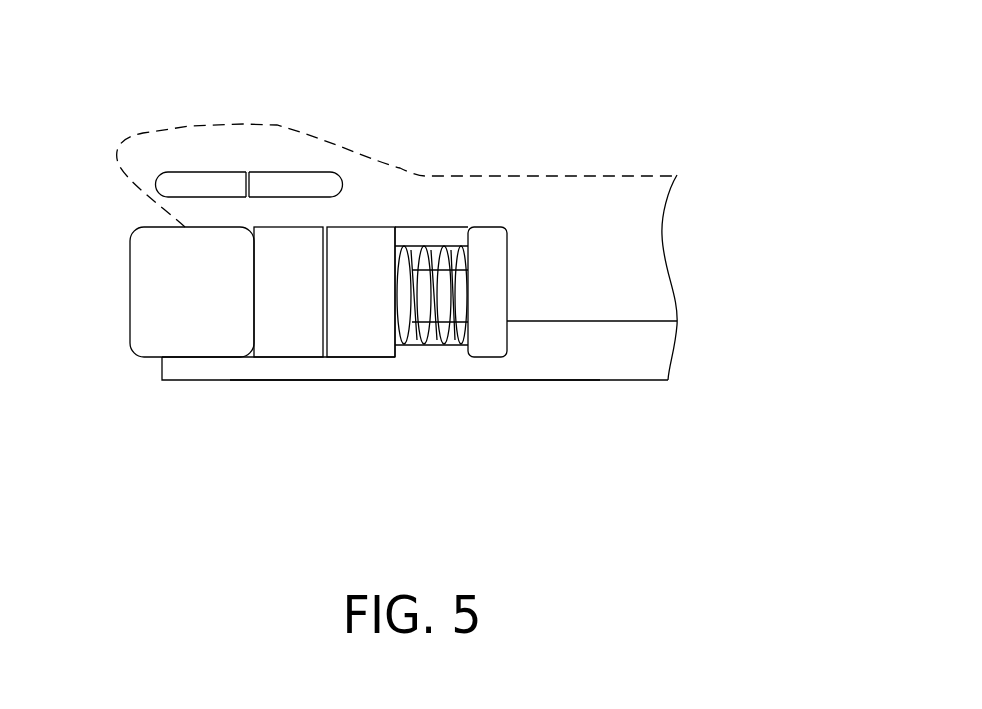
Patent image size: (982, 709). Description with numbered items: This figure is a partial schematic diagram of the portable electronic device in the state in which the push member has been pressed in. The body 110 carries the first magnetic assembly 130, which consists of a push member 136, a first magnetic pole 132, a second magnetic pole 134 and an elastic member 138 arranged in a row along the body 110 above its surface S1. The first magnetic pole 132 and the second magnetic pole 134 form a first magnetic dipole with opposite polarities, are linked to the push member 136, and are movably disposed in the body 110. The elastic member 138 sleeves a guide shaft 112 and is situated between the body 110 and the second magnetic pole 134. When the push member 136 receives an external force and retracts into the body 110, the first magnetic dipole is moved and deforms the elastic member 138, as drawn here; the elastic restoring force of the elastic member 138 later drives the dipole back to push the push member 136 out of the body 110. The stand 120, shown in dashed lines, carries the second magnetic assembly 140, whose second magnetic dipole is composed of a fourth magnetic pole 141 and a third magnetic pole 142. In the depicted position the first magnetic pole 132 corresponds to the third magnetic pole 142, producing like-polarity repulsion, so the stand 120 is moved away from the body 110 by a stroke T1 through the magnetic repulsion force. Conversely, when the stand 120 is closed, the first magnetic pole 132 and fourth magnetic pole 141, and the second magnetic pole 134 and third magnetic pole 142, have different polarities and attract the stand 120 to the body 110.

The body 110 is at (655, 348).
The guide shaft 112 is at (448, 330).
The stand 120 is at (465, 193).
The first magnetic assembly 130 is at (318, 387).
The first magnetic pole 132 is at (277, 345).
The second magnetic pole 134 is at (348, 345).
The push member 136 is at (177, 345).
The elastic member 138 is at (433, 353).
The second magnetic assembly 140 is at (249, 103).
The fourth magnetic pole 141 is at (215, 183).
The third magnetic pole 142 is at (296, 127).
The bottom surface S1 is at (570, 384).
The stroke T1 is at (553, 200).